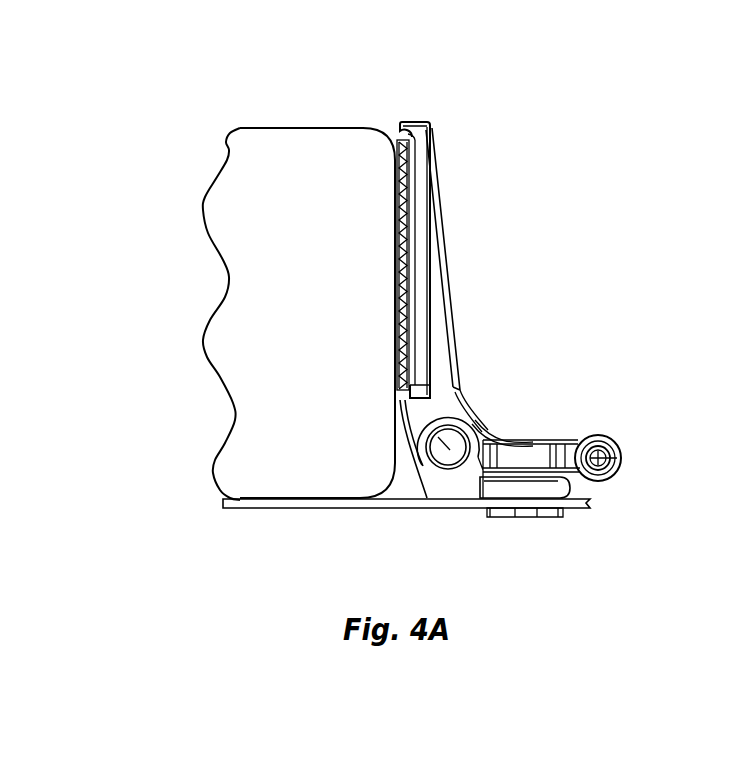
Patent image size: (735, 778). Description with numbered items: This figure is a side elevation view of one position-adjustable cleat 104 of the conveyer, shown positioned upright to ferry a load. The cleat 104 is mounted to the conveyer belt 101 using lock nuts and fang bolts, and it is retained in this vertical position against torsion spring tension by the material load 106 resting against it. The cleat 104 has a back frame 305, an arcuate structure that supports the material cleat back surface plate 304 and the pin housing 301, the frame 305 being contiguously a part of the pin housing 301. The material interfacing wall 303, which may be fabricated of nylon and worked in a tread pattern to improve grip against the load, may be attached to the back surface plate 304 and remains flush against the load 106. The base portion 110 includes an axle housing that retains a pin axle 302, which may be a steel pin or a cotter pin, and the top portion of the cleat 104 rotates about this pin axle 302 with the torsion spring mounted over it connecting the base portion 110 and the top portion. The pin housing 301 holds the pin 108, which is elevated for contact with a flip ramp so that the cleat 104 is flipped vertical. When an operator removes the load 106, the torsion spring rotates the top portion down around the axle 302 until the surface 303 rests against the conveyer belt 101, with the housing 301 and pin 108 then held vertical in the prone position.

The conveyer belt 101 is at (373, 512).
The position-adjustable cleat 104 is at (518, 190).
The material load 106 is at (312, 128).
The pin 108 is at (623, 458).
The base portion 110 is at (470, 477).
The pin housing 301 is at (623, 452).
The pin axle 302 is at (445, 422).
The material interfacing wall 303 is at (400, 225).
The back surface plate 304 is at (430, 312).
The back frame 305 is at (453, 337).